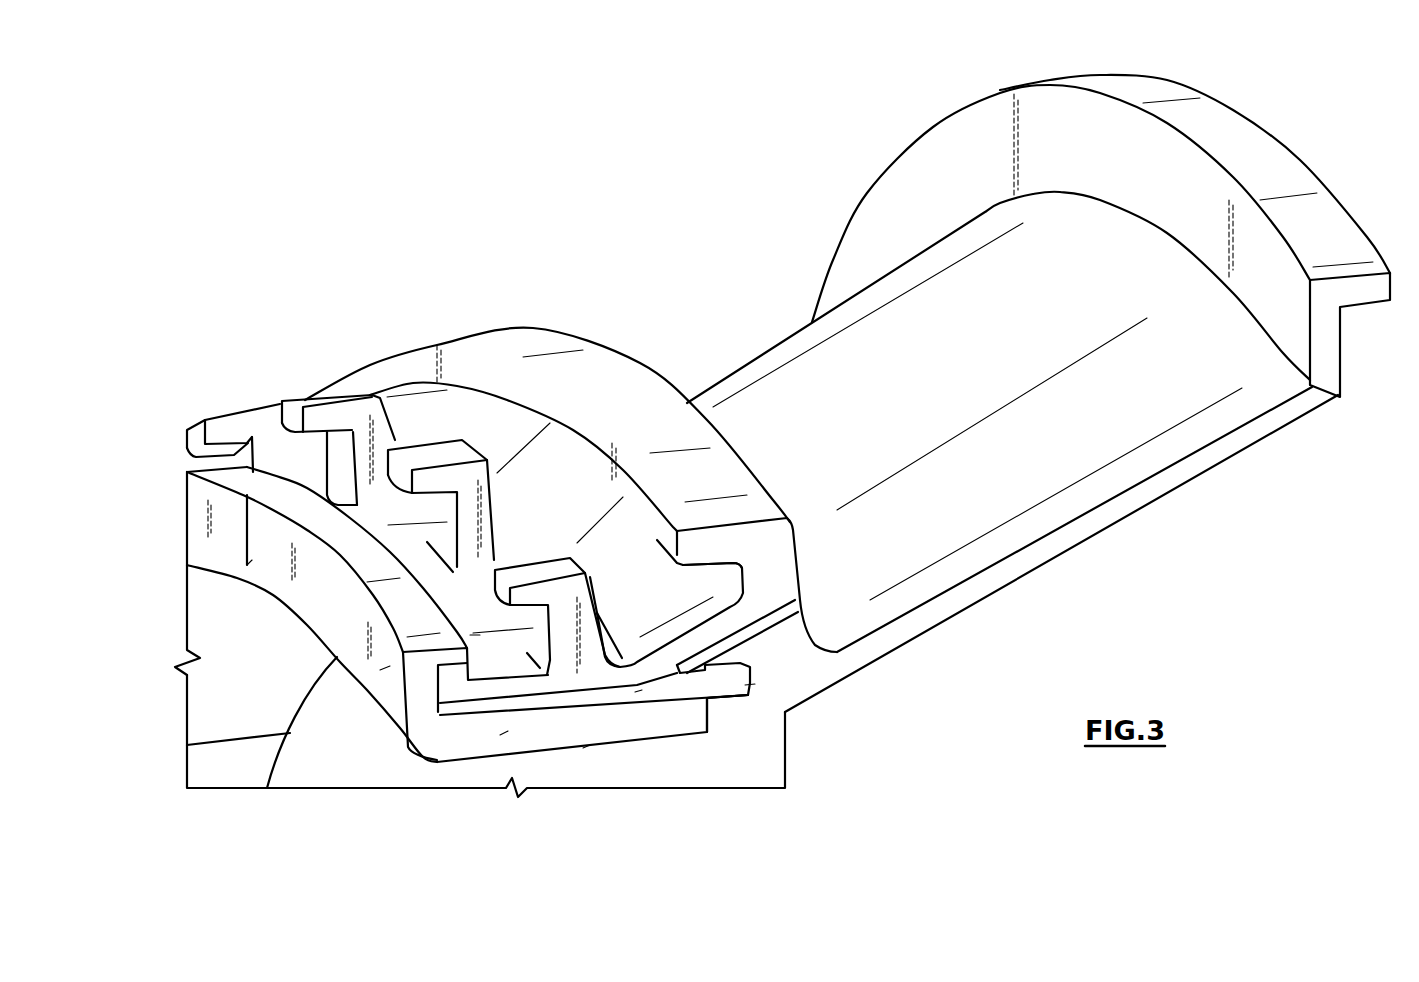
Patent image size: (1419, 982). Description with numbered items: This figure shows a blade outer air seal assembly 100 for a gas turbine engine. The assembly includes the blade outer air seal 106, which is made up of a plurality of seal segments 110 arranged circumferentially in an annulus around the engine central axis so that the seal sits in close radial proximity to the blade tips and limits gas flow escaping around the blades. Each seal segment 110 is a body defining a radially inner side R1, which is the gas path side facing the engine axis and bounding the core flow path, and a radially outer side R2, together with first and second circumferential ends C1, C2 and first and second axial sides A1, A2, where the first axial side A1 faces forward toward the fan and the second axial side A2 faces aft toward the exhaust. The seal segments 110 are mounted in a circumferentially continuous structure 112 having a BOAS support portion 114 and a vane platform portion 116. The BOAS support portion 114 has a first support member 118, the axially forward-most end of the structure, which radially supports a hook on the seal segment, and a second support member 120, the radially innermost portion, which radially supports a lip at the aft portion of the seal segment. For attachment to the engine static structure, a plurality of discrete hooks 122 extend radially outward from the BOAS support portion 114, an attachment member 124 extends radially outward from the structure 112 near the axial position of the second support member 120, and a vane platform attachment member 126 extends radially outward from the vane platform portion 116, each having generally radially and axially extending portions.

The fastening assembly 100 is at (138, 802).
The blade outer air seal 106 is at (200, 550).
The seal segment 110 is at (303, 512).
The structure 112 is at (599, 314).
The BOAS support portion 114 is at (373, 525).
The vane platform portion 116 is at (805, 365).
The first support member 118 is at (433, 765).
The second support member 120 is at (728, 707).
The discrete hooks 122 is at (227, 430).
The attachment member 124 is at (718, 547).
The vane platform attachment member 126 is at (1360, 293).
The first axial side A1 is at (385, 668).
The second axial side A2 is at (750, 685).
The first circumferential end C1 is at (500, 740).
The second circumferential end C2 is at (242, 568).
The radially inner side R1 is at (585, 747).
The radially outer side R2 is at (637, 692).